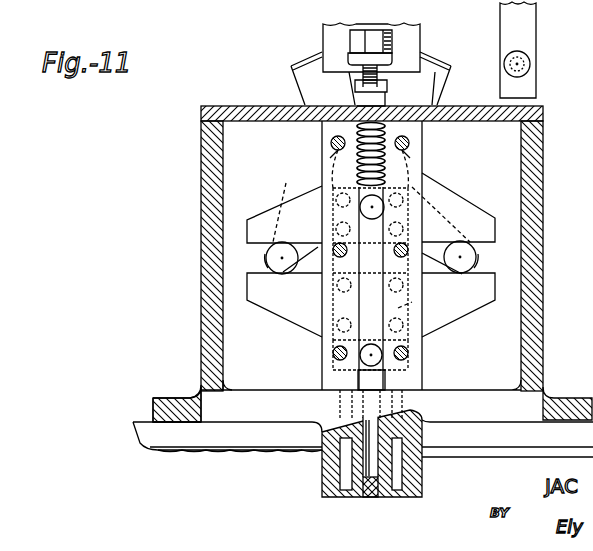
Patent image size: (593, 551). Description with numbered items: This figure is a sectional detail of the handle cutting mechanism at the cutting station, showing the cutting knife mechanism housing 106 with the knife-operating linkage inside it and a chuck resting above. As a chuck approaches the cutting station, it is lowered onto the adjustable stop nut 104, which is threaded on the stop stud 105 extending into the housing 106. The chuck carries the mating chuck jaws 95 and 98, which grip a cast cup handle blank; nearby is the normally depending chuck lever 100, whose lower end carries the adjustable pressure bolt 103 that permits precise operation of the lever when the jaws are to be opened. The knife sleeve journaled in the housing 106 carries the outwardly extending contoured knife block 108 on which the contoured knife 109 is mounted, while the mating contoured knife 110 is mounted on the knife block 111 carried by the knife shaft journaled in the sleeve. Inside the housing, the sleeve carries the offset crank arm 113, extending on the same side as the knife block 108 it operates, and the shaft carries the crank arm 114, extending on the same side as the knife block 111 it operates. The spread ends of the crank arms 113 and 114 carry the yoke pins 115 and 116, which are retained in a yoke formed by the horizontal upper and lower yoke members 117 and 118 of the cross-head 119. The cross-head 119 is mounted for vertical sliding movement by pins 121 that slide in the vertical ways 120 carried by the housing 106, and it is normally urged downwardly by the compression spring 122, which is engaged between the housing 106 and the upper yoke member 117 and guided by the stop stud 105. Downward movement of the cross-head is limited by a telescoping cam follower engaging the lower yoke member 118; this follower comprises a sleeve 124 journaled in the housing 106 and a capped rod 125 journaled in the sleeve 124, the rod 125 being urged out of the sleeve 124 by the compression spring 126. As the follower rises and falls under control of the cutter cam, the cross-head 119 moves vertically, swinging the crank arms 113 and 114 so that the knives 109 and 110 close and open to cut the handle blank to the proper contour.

The chuck jaw 95 is at (332, 33).
The chuck jaw 98 is at (415, 41).
The chuck lever 100 is at (530, 24).
The adjustable pressure bolt 103 is at (531, 64).
The adjustable stop nut 104 is at (386, 50).
The stop stud 105 is at (388, 90).
The cutting knife mechanism housing 106 is at (540, 156).
The contoured knife block 108 is at (444, 85).
The contoured knife 109 is at (441, 63).
The mating contoured knife 110 is at (300, 64).
The knife block 111 is at (302, 84).
The offset crank arm 113 is at (432, 184).
The crank arm 114 is at (295, 218).
The yoke pin 115 is at (462, 257).
The yoke pin 116 is at (268, 258).
The upper yoke member 117 is at (272, 210).
The lower yoke member 118 is at (293, 308).
The cross-head 119 is at (420, 302).
The vertical ways 120 is at (330, 377).
The pins 121 is at (371, 344).
The compression spring 122 is at (404, 128).
The sleeve 124 is at (383, 502).
The capped rod 125 is at (386, 468).
The compression spring 126 is at (371, 500).